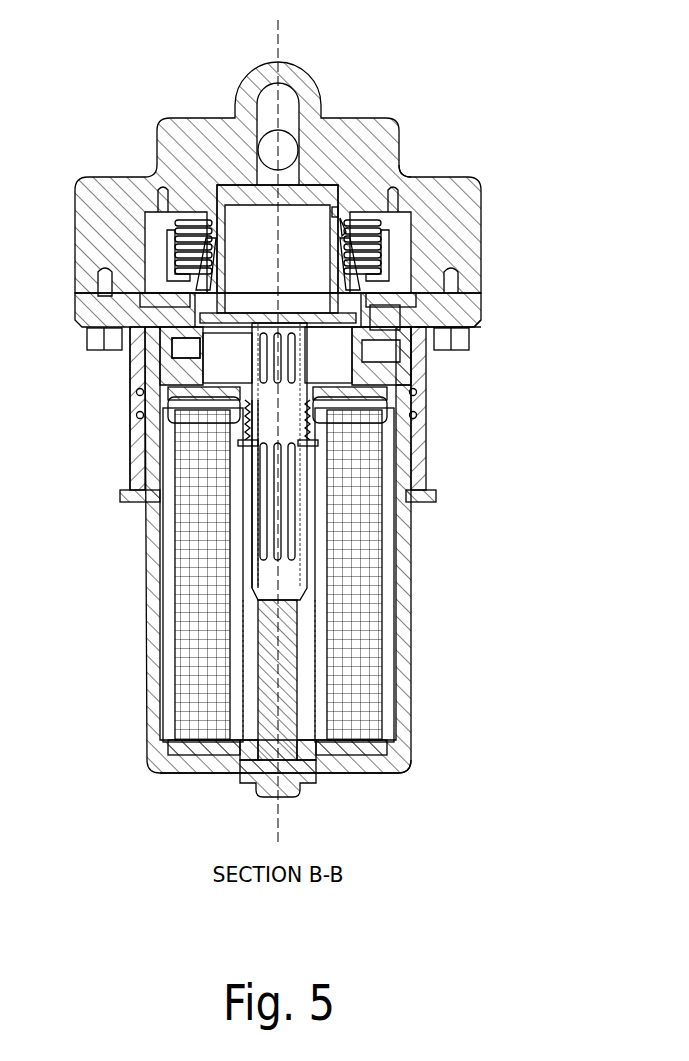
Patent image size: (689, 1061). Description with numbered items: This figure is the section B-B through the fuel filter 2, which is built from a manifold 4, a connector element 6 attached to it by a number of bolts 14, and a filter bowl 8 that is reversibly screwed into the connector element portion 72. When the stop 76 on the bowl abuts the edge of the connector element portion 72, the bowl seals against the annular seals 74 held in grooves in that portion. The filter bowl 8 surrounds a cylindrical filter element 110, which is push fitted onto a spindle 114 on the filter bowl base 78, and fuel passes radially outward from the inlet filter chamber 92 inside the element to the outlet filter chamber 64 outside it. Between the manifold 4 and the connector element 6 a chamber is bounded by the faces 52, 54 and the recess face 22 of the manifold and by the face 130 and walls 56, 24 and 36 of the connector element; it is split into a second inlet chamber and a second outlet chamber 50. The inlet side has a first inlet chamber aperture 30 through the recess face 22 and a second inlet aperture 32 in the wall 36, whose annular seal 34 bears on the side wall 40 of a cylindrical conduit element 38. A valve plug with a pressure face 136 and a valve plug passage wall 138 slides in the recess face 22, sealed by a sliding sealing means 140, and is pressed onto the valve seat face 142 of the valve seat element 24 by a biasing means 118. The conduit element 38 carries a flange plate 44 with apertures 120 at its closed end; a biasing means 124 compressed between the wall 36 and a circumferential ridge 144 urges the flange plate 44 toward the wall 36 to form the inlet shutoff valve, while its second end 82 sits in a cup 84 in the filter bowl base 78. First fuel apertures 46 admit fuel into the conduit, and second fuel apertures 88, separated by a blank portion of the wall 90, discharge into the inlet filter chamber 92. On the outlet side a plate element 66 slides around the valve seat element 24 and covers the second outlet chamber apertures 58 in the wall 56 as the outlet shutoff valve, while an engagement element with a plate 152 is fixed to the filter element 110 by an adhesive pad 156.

The fuel filter 2 is at (440, 620).
The manifold 4 is at (480, 181).
The connector element 6 is at (485, 312).
The filter bowl 8 is at (413, 648).
The bolts 14 is at (95, 340).
The recess face 22 is at (313, 118).
The valve seat element 24 is at (153, 325).
The first inlet chamber aperture 30 is at (253, 180).
The second inlet aperture 32 is at (249, 380).
The annular seal 34 is at (182, 392).
The wall 36 is at (392, 362).
The conduit element 38 is at (322, 580).
The side wall 40 is at (190, 333).
The flange plate 44 is at (328, 318).
The first fuel apertures 46 is at (385, 336).
The second outlet chamber 50 is at (155, 265).
The face 52 is at (148, 287).
The face 54 is at (153, 210).
The wall 56 is at (150, 357).
The second outlet chamber apertures 58 is at (402, 352).
The outlet filter chamber 64 is at (176, 650).
The plate element 66 is at (430, 329).
The connector element portion 72 is at (427, 473).
The annular seals 74 is at (418, 393).
The stop 76 is at (436, 497).
The filter bowl base 78 is at (357, 775).
The second end 82 is at (283, 745).
The cup 84 is at (300, 725).
The second fuel apertures 88 is at (258, 553).
The blank portion of the wall 90 is at (250, 470).
The inlet filter chamber 92 is at (276, 670).
The filter element 110 is at (358, 607).
The spindle 114 is at (247, 743).
The biasing means 118 is at (403, 180).
The apertures 120 is at (317, 318).
The biasing means 124 is at (242, 443).
The face 130 is at (152, 317).
The pressure face 136 is at (475, 298).
The valve plug passage wall 138 is at (336, 213).
The sliding sealing means 140 is at (343, 233).
The valve seat face 142 is at (375, 287).
The circumferential ridge 144 is at (412, 447).
The plate 152 is at (426, 385).
The adhesive pad 156 is at (143, 442).